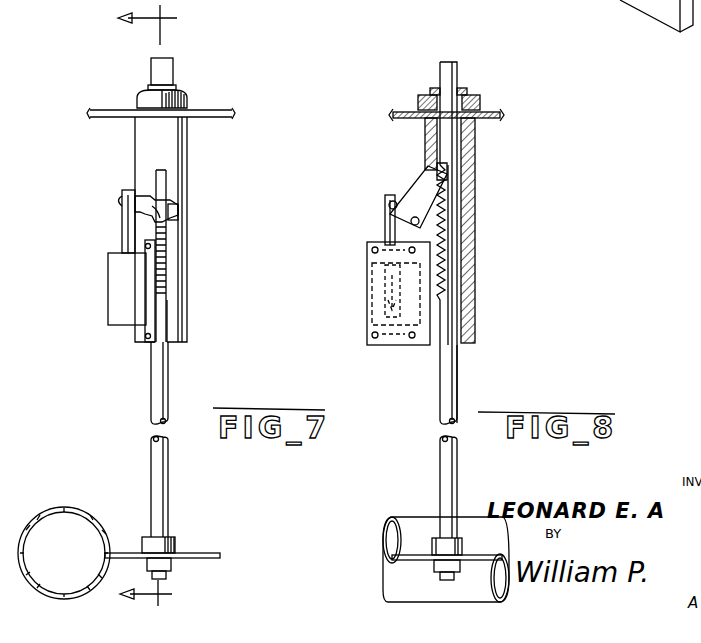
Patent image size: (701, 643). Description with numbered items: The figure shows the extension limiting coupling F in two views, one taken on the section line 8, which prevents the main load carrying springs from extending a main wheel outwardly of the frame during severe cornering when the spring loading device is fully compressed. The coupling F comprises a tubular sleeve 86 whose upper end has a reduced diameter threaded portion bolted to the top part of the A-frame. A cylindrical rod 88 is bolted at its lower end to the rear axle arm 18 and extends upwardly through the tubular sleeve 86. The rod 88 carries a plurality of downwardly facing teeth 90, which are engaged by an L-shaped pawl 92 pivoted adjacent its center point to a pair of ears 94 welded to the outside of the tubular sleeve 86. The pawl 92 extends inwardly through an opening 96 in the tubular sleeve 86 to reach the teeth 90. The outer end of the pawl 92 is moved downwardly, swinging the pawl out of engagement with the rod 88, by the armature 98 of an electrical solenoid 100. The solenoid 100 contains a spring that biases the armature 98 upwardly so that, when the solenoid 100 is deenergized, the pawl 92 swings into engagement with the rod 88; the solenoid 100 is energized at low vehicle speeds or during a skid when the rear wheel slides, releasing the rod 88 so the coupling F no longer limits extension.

In FIG. 7, the extension limiting coupling F is at (188, 177).
In FIG. 8, the extension limiting coupling F is at (478, 171).
In FIG. 7, the section line 8- 8 is at (135, 305).
In FIG. 7, the rear axle arm 18 is at (121, 552).
In FIG. 8, the rear axle arm 18 is at (420, 553).
In FIG. 8, the tubular sleeve 86 is at (470, 200).
In FIG. 7, the cylindrical rod 88 is at (160, 385).
In FIG. 8, the cylindrical rod 88 is at (450, 392).
In FIG. 7, the teeth 90 is at (170, 275).
In FIG. 8, the teeth 90 is at (445, 257).
In FIG. 7, the L-shaped pawl 92 is at (155, 200).
In FIG. 8, the L-shaped pawl 92 is at (425, 205).
In FIG. 7, the ears 94 is at (178, 212).
In FIG. 8, the opening 96 is at (433, 172).
In FIG. 7, the armature 98 is at (128, 220).
In FIG. 8, the armature 98 is at (390, 222).
In FIG. 7, the electrical solenoid 100 is at (125, 283).
In FIG. 8, the electrical solenoid 100 is at (375, 292).